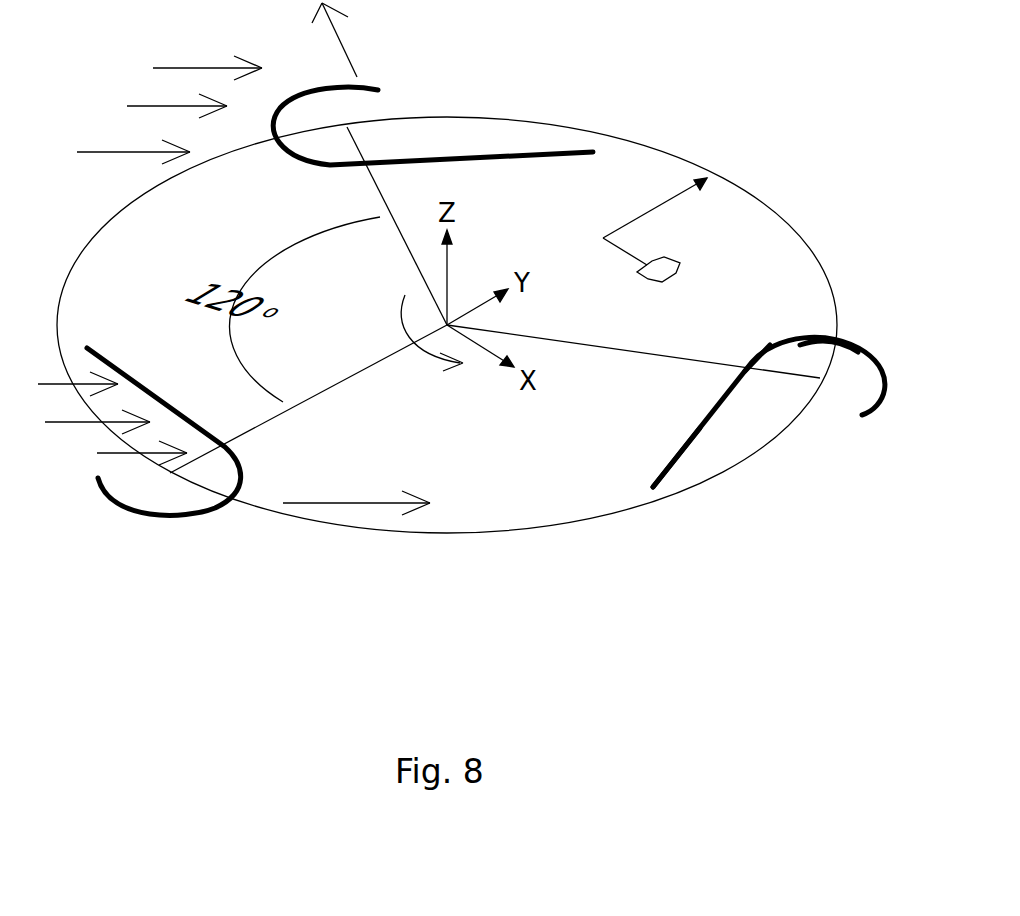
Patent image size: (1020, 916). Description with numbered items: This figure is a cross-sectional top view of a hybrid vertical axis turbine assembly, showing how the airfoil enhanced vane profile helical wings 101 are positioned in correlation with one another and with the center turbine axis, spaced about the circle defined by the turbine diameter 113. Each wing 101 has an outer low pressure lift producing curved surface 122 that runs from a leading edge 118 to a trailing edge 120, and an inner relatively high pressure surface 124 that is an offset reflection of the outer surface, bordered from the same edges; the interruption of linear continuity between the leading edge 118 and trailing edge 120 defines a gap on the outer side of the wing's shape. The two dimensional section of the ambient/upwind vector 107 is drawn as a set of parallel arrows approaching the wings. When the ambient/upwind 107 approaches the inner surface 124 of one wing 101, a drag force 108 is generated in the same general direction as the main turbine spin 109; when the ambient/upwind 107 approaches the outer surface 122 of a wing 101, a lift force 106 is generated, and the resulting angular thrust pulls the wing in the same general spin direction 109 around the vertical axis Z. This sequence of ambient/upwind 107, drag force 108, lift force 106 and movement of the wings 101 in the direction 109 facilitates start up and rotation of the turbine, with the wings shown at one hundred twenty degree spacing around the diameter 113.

The airfoil enhanced vane profile helical wing 101 is at (874, 412).
The lift force 106 is at (346, 58).
The ambient/upwind 107 is at (258, 36).
The drag force 108 is at (418, 494).
The direction of turbine spin 109 is at (392, 324).
The turbine diameter 113 is at (684, 210).
The leading edge 118 is at (844, 338).
The trailing edge 120 is at (650, 478).
The outer low pressure lift producing curved surface 122 is at (112, 512).
The inner relatively high pressure surface 124 is at (752, 358).